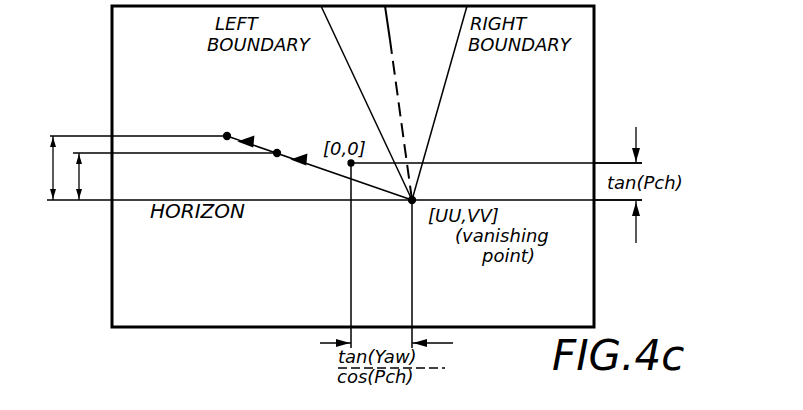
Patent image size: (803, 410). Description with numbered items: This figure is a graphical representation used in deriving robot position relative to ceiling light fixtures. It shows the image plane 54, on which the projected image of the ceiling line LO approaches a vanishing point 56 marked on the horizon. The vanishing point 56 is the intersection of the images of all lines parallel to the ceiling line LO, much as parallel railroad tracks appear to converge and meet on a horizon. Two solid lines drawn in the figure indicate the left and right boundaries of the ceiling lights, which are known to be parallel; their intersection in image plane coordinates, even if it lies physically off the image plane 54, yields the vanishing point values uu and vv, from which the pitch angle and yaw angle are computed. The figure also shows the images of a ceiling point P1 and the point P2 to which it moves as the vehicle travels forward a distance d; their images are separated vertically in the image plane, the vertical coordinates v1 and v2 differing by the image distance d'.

The image plane 54 is at (594, 86).
The vanishing point 56 is at (412, 203).
The ceiling line LO is at (391, 44).
The point P1 is at (267, 163).
The point P2 is at (225, 125).
The image coordinate v1' v1 is at (85, 176).
The image coordinate v2' v2 is at (49, 168).